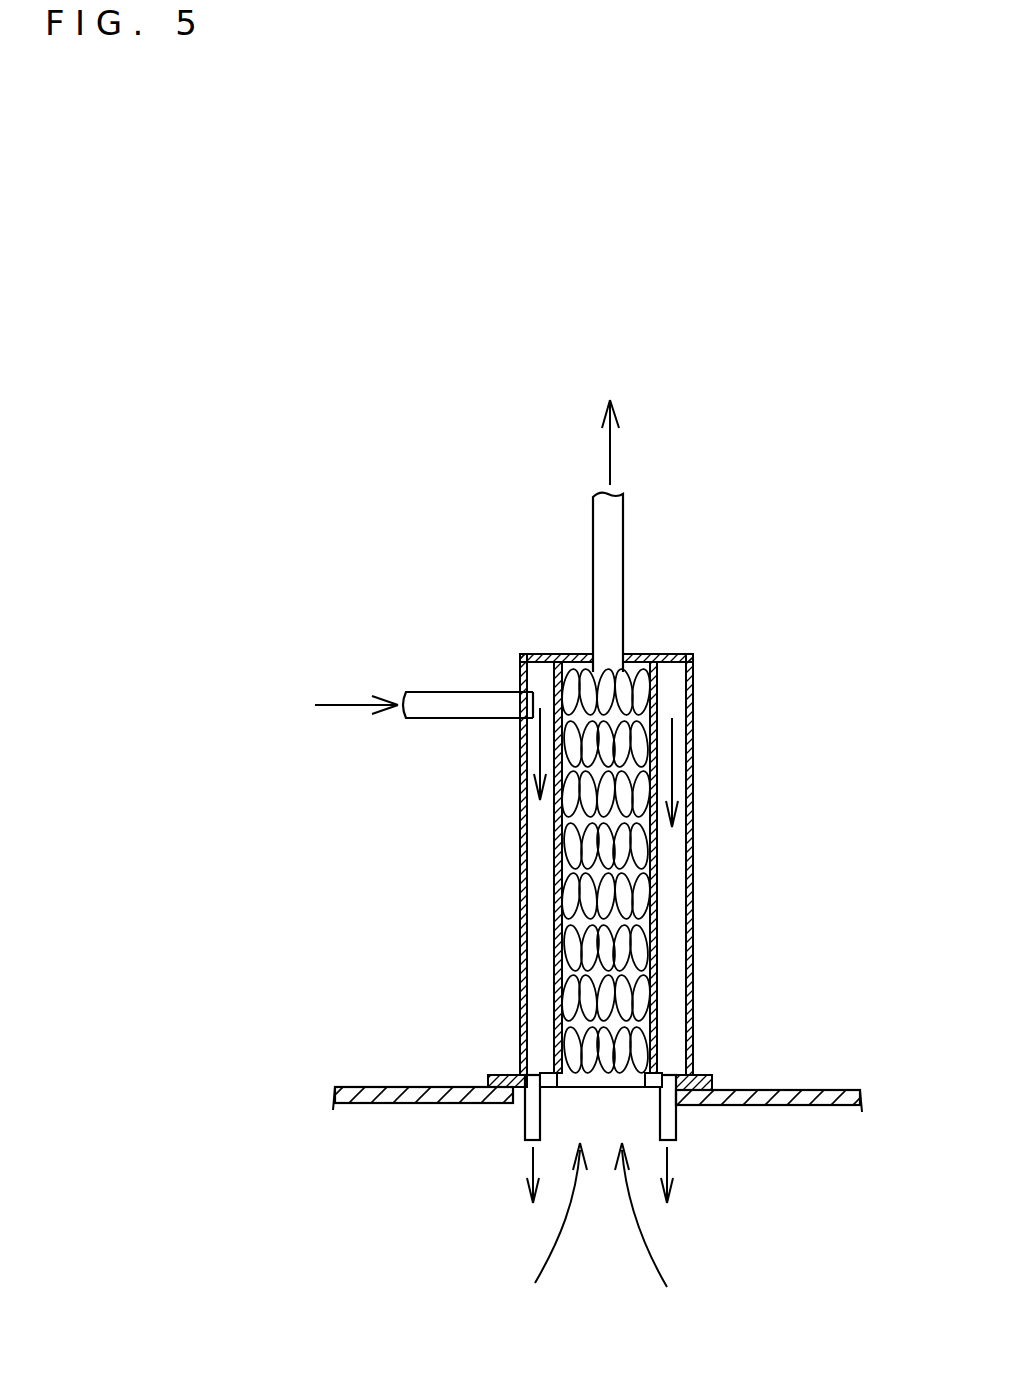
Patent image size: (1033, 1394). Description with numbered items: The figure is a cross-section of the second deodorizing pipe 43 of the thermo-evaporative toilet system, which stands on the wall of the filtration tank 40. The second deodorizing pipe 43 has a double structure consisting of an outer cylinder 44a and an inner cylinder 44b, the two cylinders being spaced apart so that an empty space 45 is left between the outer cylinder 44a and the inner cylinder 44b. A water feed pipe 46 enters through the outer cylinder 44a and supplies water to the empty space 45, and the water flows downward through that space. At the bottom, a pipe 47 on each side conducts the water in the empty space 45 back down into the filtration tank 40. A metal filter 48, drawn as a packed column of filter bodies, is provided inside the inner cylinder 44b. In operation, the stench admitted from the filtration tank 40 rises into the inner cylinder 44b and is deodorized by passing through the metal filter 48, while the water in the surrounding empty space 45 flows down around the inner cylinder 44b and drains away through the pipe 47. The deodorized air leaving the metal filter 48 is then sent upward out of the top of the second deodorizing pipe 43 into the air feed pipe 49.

The filtration tank 40 is at (823, 1229).
The second deodorizing pipe 43 is at (796, 578).
The outer cylinder 44a is at (690, 770).
The inner cylinder 44b is at (657, 858).
The empty space 45 is at (672, 942).
The water feed pipe 46 is at (450, 690).
The pipe 47 is at (523, 1120).
The metal filter 48 is at (567, 885).
The air feed pipe 49 is at (613, 557).